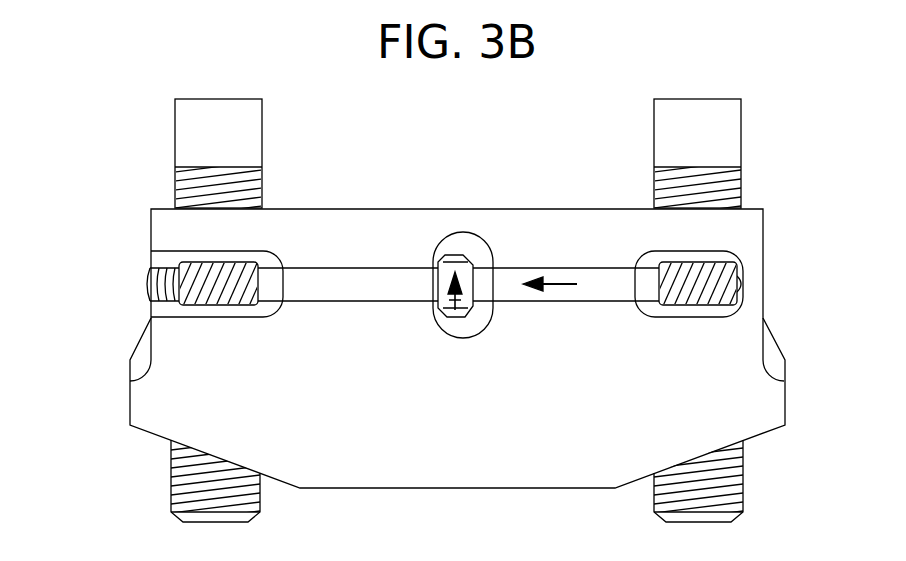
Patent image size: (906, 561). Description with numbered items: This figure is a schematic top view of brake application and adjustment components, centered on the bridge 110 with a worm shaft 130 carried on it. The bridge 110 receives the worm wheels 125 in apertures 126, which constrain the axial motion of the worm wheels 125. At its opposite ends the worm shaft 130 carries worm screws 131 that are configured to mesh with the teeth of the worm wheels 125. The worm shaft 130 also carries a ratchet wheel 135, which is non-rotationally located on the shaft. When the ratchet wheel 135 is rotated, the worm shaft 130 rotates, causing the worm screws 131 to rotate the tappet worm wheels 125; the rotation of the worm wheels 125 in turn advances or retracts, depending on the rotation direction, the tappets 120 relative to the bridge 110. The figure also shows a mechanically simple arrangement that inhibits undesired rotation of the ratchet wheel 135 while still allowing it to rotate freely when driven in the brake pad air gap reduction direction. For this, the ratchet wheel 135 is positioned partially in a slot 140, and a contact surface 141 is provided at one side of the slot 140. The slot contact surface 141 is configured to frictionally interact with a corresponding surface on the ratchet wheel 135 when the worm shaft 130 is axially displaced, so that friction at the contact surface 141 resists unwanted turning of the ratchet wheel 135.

The bridge 110 is at (173, 403).
The tappets 120 is at (263, 185).
The worm wheels 125 is at (144, 289).
The apertures 126 is at (162, 259).
The worm shaft 130 is at (540, 302).
The worm screws 131 is at (231, 306).
The ratchet wheel 135 is at (476, 262).
The slot 140 is at (480, 339).
The contact surface 141 is at (441, 257).